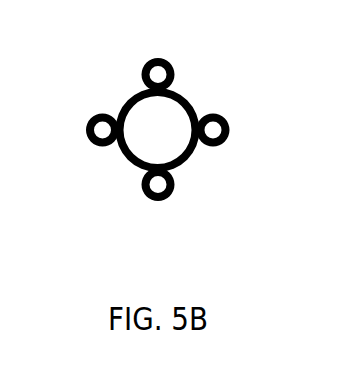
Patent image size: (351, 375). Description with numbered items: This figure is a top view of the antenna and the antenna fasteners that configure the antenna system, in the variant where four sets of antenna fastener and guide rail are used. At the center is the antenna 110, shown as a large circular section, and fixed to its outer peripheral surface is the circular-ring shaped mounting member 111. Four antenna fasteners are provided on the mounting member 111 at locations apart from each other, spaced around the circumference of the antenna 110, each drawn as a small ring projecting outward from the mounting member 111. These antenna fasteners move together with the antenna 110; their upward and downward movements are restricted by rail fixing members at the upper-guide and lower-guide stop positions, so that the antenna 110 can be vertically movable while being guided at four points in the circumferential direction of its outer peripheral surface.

The antenna 110 is at (168, 152).
The mounting member 111 is at (127, 160).